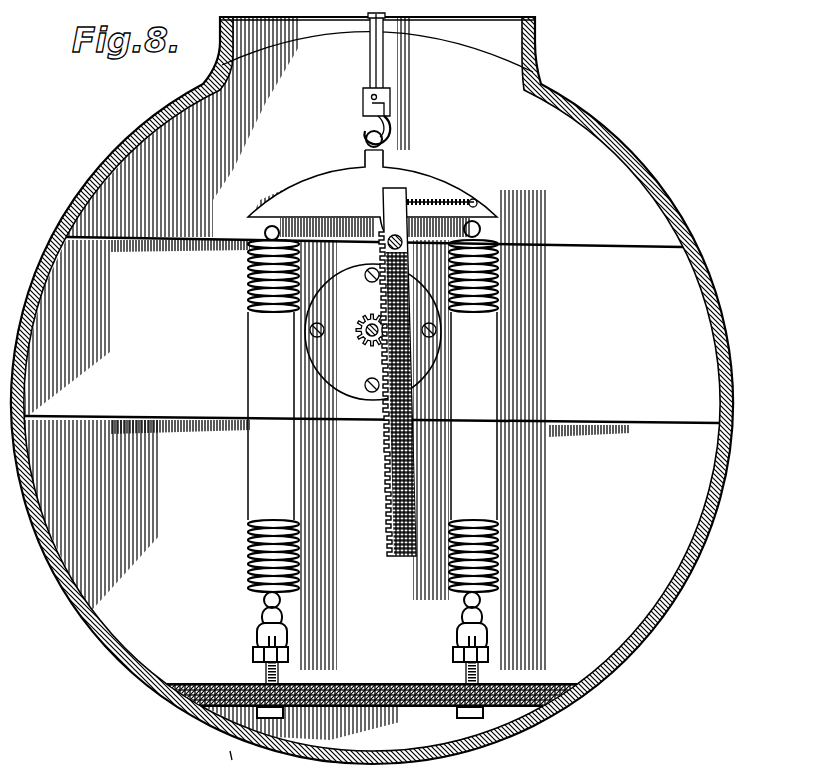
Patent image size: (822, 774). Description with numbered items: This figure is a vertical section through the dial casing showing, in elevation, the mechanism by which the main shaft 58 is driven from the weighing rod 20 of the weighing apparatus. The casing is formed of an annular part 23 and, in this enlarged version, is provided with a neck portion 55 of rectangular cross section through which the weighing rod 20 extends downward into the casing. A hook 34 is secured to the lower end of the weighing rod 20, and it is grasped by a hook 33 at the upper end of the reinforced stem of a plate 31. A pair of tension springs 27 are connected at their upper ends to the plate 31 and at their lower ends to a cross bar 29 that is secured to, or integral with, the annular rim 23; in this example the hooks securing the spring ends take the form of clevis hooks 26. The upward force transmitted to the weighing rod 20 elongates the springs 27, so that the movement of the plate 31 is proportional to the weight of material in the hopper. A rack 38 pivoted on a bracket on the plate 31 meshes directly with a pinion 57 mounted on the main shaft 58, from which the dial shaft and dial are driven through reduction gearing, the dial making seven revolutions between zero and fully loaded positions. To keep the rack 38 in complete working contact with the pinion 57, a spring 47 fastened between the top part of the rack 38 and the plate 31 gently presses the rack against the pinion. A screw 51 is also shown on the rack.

The weighing rod 20 is at (376, 63).
The hook 34 is at (384, 110).
The hook 33 is at (391, 132).
The plate 31 is at (414, 178).
The spring 47 is at (444, 198).
The tension springs 27 is at (287, 505).
The pinion 57 is at (370, 318).
The main shaft 58 is at (367, 338).
The screw 51 is at (403, 250).
The rack 38 is at (402, 556).
The triangular opening 26 is at (277, 614).
The cross bar 29 is at (361, 689).
The annular part 23 is at (442, 749).
The neck portion 55 is at (228, 762).